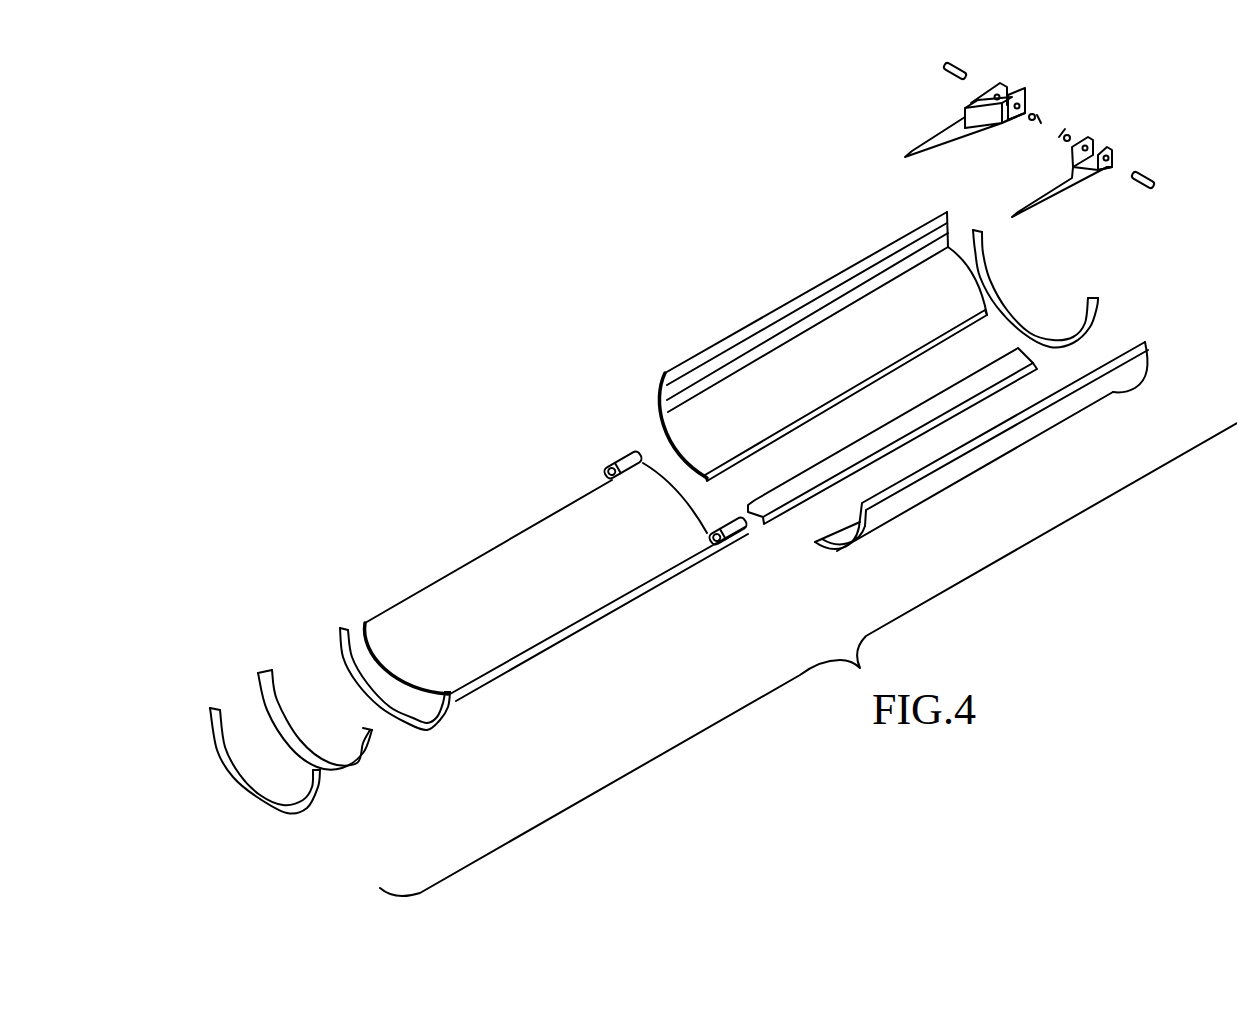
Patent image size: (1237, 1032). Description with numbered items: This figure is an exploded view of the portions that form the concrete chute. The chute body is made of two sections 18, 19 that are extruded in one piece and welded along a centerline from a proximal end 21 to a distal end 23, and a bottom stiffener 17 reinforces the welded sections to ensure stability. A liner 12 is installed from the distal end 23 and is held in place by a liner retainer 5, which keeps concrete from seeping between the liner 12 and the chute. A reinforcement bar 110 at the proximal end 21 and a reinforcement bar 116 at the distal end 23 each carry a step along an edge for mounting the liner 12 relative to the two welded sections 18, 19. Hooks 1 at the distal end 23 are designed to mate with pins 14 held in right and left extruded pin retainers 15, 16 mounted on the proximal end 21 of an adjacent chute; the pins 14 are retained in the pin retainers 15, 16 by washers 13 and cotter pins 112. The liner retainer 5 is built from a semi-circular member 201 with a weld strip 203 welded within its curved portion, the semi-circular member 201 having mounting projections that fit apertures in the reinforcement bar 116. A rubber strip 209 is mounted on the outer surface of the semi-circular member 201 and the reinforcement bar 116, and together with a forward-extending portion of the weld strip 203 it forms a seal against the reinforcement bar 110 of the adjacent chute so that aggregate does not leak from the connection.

The hooks 1 is at (605, 463).
The liner retainer 5 is at (357, 784).
The liner 12 is at (487, 553).
The washers 13 is at (1032, 112).
The pins 14 is at (945, 75).
The extruded pin retainer 15 is at (1077, 173).
The extruded pin retainer 16 is at (932, 127).
The bottom stiffener 17 is at (770, 517).
The section 18 is at (802, 298).
The section 19 is at (1100, 397).
The proximal end 21 is at (960, 273).
The distal end 23 is at (665, 430).
The reinforcement bar 110 is at (1100, 310).
The cotter pins 112 is at (1070, 131).
The reinforcement bar 116 is at (450, 715).
The semi-circular member 201 is at (260, 670).
The weld strip 203 is at (272, 680).
The rubber strip 209 is at (262, 803).